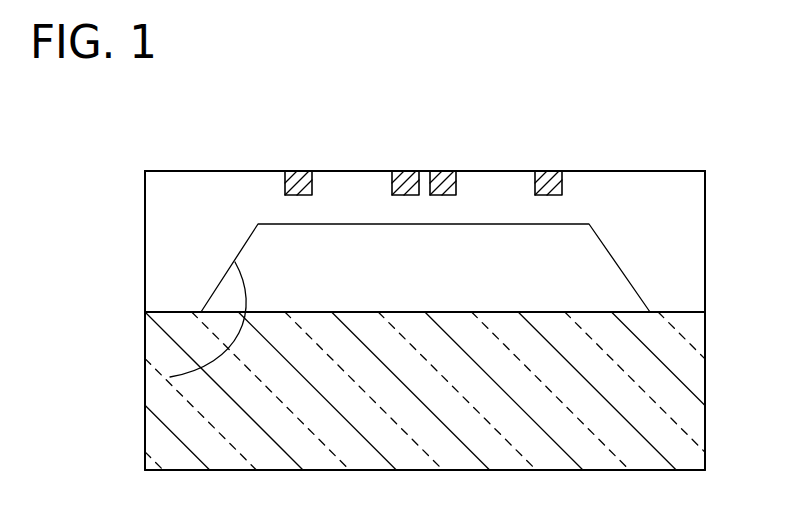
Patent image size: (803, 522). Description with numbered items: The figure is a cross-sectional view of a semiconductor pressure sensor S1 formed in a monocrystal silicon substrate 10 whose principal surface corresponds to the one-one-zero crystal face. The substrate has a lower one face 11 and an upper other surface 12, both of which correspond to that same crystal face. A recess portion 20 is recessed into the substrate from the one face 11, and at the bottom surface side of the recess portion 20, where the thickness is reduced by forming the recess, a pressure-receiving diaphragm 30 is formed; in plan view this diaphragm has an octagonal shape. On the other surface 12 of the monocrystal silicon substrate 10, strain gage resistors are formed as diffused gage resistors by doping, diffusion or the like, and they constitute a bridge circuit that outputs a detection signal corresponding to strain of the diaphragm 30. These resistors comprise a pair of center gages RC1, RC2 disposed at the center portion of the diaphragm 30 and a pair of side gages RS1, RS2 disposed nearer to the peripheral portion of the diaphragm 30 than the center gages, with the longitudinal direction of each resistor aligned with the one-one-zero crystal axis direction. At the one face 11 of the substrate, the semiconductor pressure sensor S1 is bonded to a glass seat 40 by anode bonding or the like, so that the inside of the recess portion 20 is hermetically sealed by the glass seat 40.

The semiconductor pressure sensor S1 is at (685, 168).
The monocrystal silicon substrate 10 is at (680, 233).
The one face 11 is at (173, 312).
The other surface 12 is at (173, 171).
The recess portion 20 is at (170, 377).
The diaphragm 30 is at (355, 190).
The glass seat 40 is at (683, 362).
The side gage RS1 is at (300, 171).
The side gage RS2 is at (554, 170).
The center gage RC1 is at (408, 173).
The center gage RC2 is at (447, 172).